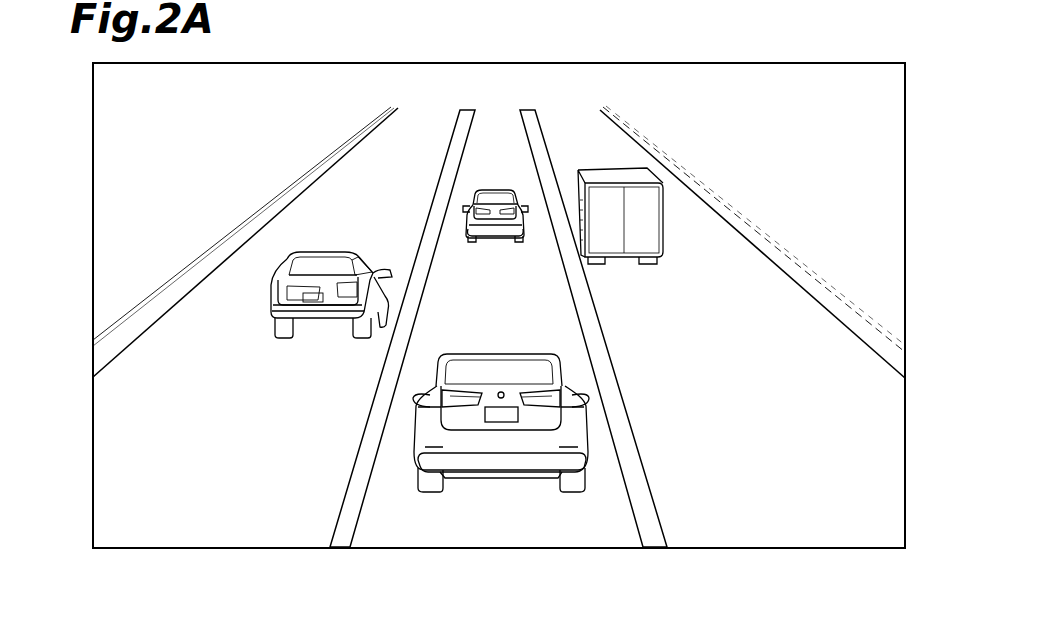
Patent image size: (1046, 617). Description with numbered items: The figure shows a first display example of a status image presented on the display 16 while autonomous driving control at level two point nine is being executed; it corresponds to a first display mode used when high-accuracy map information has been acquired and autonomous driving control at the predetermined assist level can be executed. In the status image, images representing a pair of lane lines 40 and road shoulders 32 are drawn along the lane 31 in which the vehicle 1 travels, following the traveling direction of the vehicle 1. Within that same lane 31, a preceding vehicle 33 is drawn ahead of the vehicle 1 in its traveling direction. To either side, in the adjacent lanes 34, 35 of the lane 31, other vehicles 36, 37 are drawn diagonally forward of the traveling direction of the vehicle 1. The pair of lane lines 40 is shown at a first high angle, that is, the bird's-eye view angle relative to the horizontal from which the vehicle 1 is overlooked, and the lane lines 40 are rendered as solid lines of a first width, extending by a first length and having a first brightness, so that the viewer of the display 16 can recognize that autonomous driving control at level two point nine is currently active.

The vehicle 1 is at (516, 472).
The display 16 is at (840, 63).
The lane 31 is at (410, 527).
The road shoulders 32 is at (125, 303).
The preceding vehicle 33 is at (495, 190).
The adjacent lane 34 is at (185, 528).
The adjacent lane 35 is at (752, 527).
The other vehicle 36 is at (373, 262).
The other vehicle 37 is at (590, 167).
The lane lines 40 is at (345, 533).